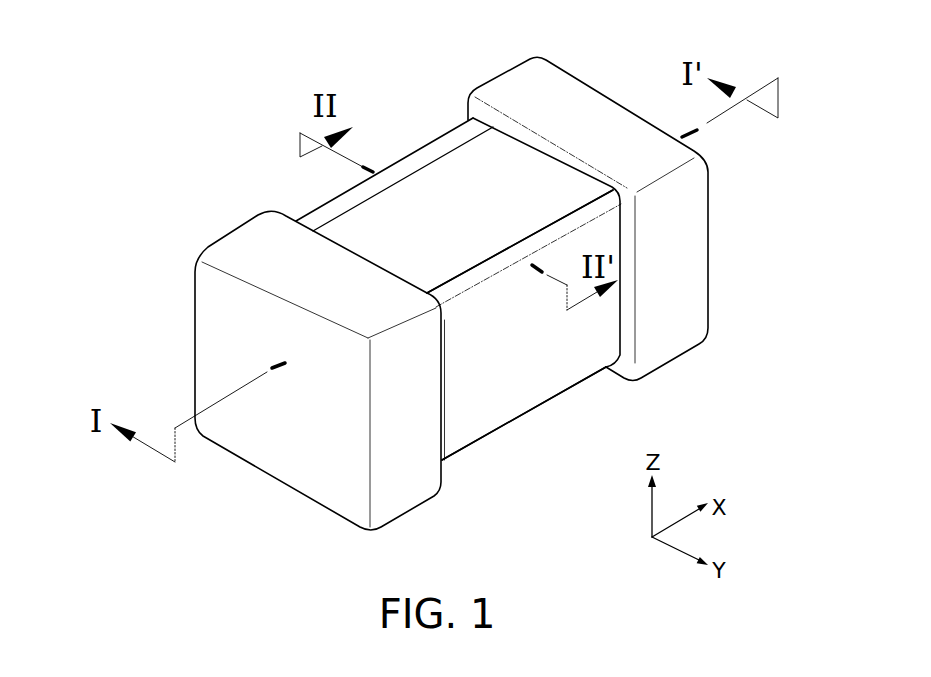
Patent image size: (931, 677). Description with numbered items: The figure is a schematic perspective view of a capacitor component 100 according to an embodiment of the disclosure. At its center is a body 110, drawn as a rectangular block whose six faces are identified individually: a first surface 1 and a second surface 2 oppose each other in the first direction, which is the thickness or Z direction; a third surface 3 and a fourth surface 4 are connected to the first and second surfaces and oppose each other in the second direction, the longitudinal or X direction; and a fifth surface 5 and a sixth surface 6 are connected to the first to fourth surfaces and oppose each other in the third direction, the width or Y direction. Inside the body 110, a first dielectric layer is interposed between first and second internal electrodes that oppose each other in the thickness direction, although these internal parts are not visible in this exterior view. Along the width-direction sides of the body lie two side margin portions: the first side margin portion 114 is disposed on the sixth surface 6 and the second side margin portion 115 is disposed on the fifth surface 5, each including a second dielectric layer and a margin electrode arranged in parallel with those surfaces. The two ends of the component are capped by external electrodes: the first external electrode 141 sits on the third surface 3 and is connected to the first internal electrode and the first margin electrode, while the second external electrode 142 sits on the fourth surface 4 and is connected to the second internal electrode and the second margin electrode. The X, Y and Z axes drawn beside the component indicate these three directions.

The capacitor component 100 is at (253, 70).
The body 110 is at (332, 228).
The first external electrode 141 is at (252, 245).
The second external electrode 142 is at (508, 97).
The first surface 1 is at (494, 385).
The second surface 2 is at (450, 170).
The third surface 3 is at (290, 430).
The fourth surface 4 is at (658, 237).
The fifth surface 5 is at (553, 355).
The sixth surface 6 is at (410, 198).
The first side margin portion 114 is at (460, 138).
The second side margin portion 115 is at (558, 230).